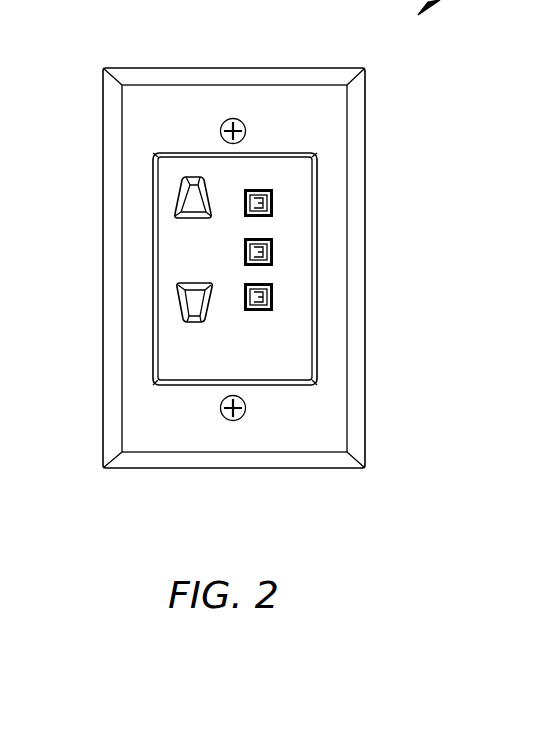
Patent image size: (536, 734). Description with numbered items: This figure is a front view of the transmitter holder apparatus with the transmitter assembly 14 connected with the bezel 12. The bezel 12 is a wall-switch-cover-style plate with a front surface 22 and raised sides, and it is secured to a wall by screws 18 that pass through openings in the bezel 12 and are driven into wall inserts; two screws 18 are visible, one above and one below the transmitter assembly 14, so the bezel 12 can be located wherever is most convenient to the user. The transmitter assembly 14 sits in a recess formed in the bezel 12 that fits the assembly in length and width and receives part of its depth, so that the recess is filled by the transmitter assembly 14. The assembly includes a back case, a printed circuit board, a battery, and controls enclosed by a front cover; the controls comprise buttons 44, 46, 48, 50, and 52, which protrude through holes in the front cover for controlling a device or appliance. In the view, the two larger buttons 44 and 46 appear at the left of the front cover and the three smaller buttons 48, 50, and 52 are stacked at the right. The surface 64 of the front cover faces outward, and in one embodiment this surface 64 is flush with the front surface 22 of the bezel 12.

The bezel 12 is at (327, 443).
The transmitter assembly 14 is at (320, 172).
The screws 18 is at (233, 118).
The front surface 22 is at (322, 425).
The button 44 is at (189, 198).
The button 46 is at (190, 297).
The button 48 is at (270, 203).
The button 50 is at (270, 252).
The button 52 is at (270, 297).
The surface 64 is at (206, 367).